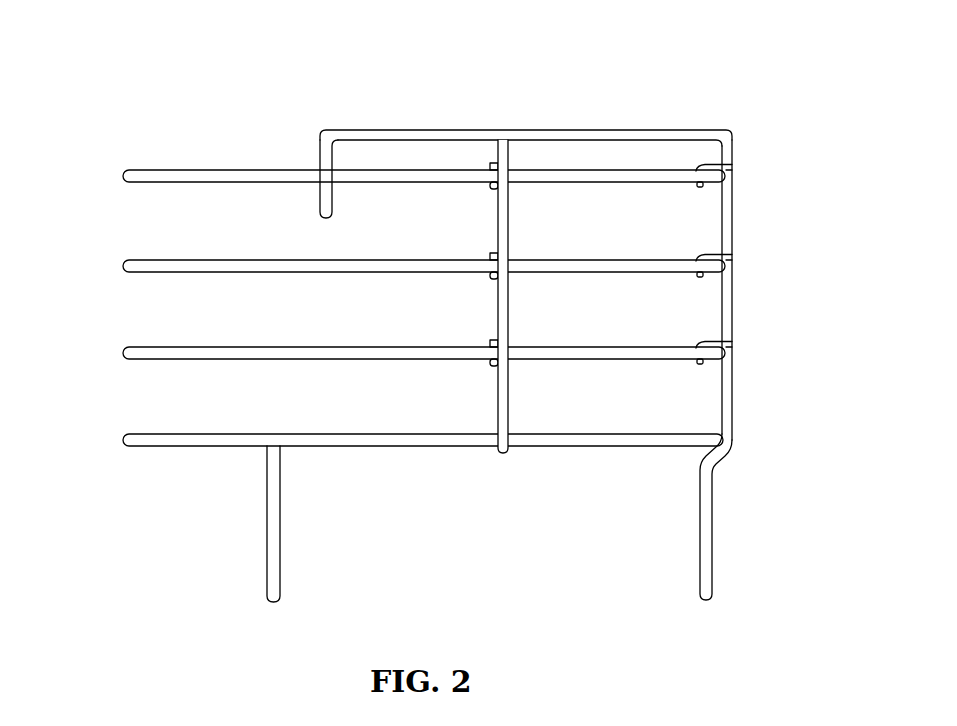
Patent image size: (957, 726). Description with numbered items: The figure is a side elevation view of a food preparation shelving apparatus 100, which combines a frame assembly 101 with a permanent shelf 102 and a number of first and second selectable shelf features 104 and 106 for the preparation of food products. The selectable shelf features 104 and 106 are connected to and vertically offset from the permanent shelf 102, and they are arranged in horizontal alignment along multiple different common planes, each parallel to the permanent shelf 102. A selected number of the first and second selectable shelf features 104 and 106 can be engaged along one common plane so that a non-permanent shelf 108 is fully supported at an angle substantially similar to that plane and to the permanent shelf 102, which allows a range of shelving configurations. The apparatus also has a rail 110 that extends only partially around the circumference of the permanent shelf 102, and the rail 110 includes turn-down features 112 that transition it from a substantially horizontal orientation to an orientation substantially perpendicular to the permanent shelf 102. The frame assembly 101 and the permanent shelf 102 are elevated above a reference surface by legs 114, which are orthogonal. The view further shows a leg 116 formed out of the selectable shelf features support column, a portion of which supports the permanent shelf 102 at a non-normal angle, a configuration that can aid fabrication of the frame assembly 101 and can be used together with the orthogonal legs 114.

The food preparation shelving apparatus 100 is at (153, 74).
The frame assembly 101 is at (733, 218).
The permanent shelf 102 is at (150, 447).
The first selectable shelf feature 104 is at (479, 292).
The second selectable shelf feature 106 is at (688, 328).
The non-permanent shelf 108 is at (152, 272).
The rail 110 is at (437, 130).
The turn-down feature 112 is at (318, 158).
The leg 114 is at (280, 505).
The leg 116 is at (713, 493).